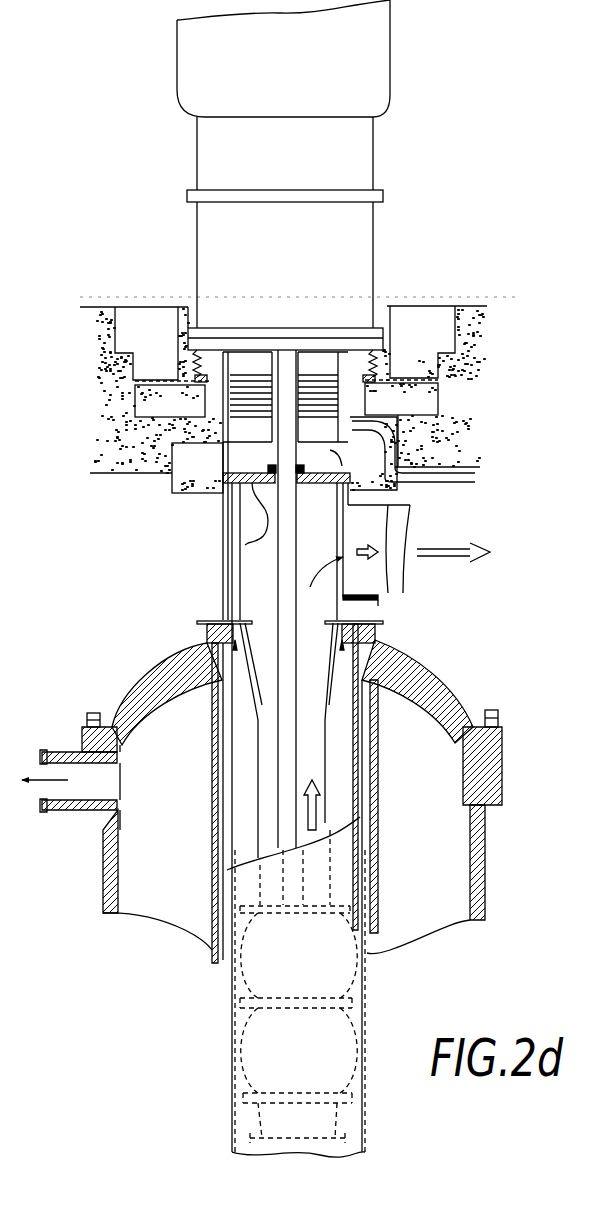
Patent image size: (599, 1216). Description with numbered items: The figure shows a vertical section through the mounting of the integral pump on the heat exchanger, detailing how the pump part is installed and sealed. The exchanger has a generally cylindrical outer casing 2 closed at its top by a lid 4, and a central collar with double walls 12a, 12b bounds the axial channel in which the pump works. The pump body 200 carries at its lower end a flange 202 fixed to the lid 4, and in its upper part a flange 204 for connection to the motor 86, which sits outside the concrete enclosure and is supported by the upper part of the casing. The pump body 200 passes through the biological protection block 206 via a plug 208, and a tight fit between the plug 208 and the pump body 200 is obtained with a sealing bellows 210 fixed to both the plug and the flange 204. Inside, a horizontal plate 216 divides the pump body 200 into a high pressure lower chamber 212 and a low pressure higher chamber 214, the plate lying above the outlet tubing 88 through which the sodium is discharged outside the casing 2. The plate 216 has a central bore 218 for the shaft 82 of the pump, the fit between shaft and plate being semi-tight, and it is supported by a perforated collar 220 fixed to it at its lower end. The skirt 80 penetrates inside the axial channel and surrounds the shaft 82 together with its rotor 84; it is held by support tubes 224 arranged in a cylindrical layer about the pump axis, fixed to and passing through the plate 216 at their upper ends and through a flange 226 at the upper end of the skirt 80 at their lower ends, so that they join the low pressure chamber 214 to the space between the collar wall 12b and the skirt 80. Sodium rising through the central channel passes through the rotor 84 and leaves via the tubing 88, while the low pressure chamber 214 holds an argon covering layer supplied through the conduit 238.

The outer casing 2 is at (487, 853).
The lid 4 is at (130, 693).
The outer wall of collar 12a is at (363, 690).
The inner wall of collar 12b is at (363, 773).
The skirt 80 is at (330, 803).
The shaft 82 is at (287, 558).
The rotor 84 is at (370, 917).
The motor 86 is at (358, 247).
The outlet tubing 88 is at (357, 603).
The pump body 200 is at (378, 626).
The flange 202 is at (203, 628).
The flange 204 is at (357, 330).
The biological protection block 206 is at (388, 362).
The plug 208 is at (417, 400).
The sealing bellows 210 is at (434, 367).
The high pressure lower chamber 212 is at (392, 512).
The low pressure higher chamber 214 is at (247, 428).
The horizontal plate 216 is at (240, 520).
The bore 218 is at (243, 542).
The perforated collar 220 is at (207, 396).
The support tube 224 is at (377, 590).
The flange 226 is at (223, 620).
The conduit 238 is at (448, 486).